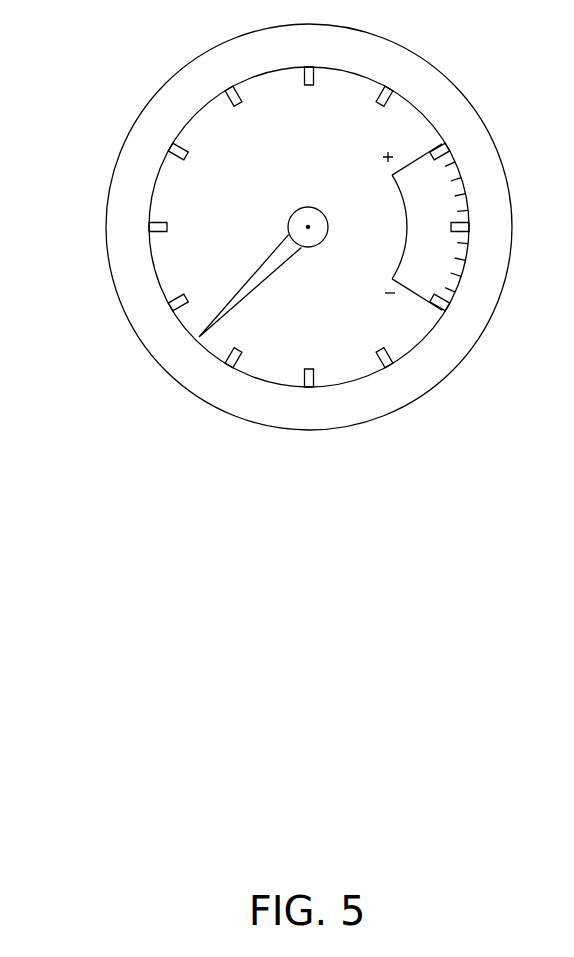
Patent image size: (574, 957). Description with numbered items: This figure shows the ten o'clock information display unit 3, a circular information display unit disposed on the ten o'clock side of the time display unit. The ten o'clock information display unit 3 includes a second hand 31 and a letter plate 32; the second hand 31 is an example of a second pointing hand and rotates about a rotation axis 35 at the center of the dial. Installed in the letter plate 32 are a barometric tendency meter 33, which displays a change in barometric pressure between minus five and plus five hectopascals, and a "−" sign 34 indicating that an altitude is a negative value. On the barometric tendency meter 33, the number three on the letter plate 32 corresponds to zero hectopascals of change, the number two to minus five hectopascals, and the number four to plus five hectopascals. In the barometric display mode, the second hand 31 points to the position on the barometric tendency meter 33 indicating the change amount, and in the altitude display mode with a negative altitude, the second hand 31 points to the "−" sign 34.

The 10 o'clock information display unit 3 is at (178, 72).
The second hand 31 is at (233, 292).
The letter plate 32 is at (178, 187).
The barometric tendency meter 33 is at (417, 156).
The "−" sign 34 is at (392, 300).
The rotation axis 35 is at (308, 227).